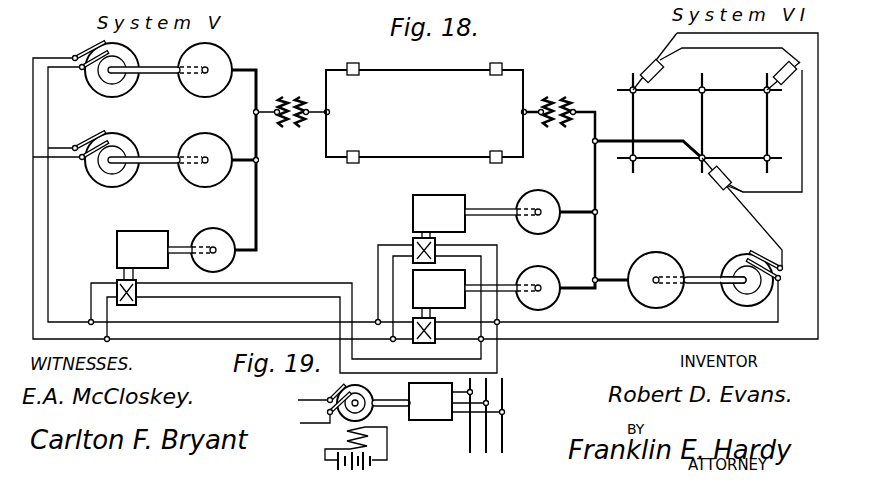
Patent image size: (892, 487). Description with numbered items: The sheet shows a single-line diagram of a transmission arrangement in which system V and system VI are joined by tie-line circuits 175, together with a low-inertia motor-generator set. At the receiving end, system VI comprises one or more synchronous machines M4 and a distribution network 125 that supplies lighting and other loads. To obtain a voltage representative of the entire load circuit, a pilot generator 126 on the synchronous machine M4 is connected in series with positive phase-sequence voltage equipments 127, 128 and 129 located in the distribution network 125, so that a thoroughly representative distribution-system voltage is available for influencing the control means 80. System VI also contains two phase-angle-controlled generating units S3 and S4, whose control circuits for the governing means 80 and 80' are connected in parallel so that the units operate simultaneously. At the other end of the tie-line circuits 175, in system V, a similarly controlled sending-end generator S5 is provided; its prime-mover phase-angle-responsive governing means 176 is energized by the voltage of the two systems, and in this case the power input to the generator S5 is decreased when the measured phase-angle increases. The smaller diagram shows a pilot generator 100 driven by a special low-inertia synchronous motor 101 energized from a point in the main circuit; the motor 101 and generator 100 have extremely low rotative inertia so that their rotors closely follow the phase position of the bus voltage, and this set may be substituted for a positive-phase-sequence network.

In FIG. 18, the tie-line circuits 175 is at (445, 122).
In FIG. 18, the distribution network 125 is at (748, 77).
In FIG. 18, the positive phase-sequence voltage equipment 129 is at (652, 63).
In FIG. 18, the positive phase-sequence voltage equipment 128 is at (787, 67).
In FIG. 18, the positive phase-sequence voltage equipment 127 is at (714, 186).
In FIG. 18, the pilot generator 126 is at (741, 258).
In FIG. 18, the synchronous machine M4 is at (672, 256).
In FIG. 18, the phase-angle-control generator S4 is at (570, 193).
In FIG. 18, the phase-angle-control generator S3 is at (568, 278).
In FIG. 18, the sending-end generator S5 is at (206, 232).
In FIG. 18, the governing means 80' is at (401, 241).
In FIG. 18, the control means 80 is at (437, 336).
In FIG. 18, the prime-mover phase-angle-responsive governing means 176 is at (136, 305).
In FIG. 19, the pilot generator 100 is at (317, 470).
In FIG. 19, the low inertia driving motor 101 is at (437, 446).